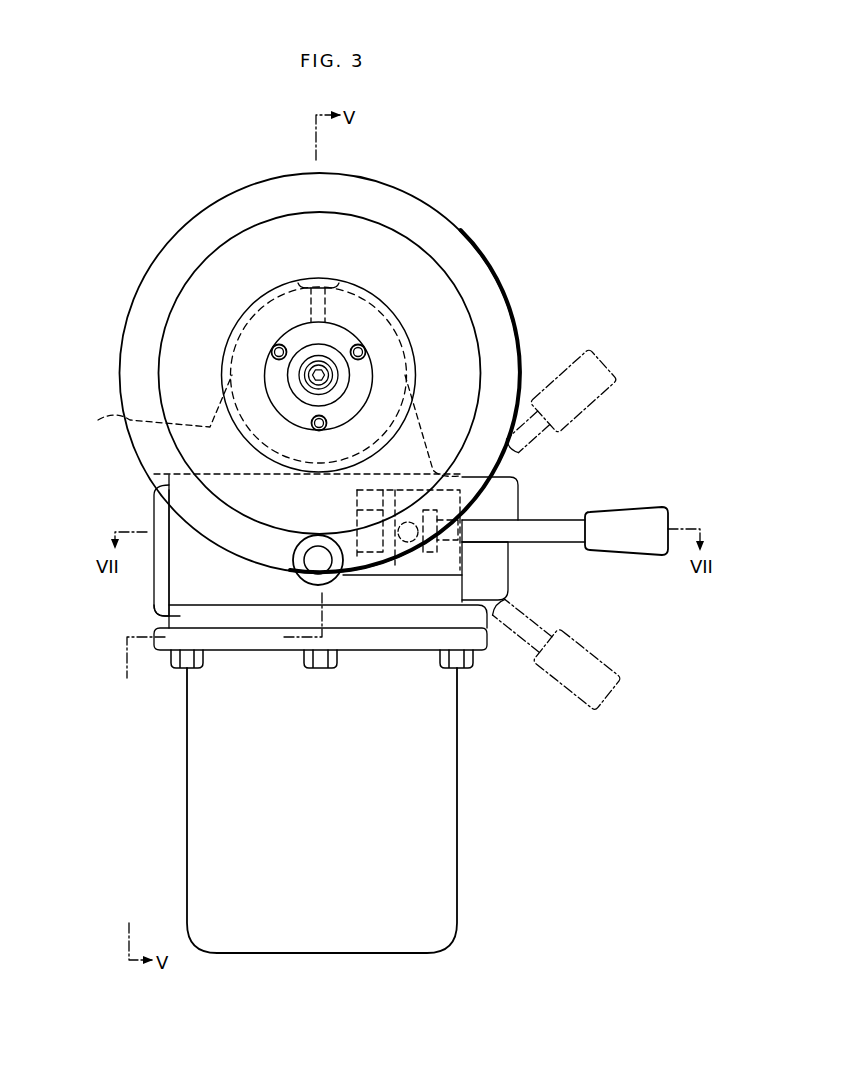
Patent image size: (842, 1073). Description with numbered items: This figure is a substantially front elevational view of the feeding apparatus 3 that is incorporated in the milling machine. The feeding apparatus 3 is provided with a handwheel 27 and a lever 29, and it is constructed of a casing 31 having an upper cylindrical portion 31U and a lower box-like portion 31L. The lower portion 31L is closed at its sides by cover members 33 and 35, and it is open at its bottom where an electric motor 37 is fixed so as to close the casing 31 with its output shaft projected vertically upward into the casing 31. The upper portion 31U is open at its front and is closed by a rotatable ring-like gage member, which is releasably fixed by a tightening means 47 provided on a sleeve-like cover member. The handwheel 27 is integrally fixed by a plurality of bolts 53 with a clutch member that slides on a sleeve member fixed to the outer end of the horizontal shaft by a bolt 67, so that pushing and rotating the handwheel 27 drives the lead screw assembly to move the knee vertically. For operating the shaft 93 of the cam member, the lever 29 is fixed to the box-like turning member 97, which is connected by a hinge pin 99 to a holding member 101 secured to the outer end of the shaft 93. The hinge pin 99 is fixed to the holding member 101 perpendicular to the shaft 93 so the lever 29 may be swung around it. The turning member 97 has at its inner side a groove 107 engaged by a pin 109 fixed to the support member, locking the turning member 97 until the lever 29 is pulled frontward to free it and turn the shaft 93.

The feeding apparatus 3 is at (97, 336).
The handwheel 27 is at (489, 267).
The lever 29 is at (565, 520).
The casing 31 is at (178, 545).
The upper cylindrical portion 31U is at (261, 425).
The lower box-like portion 31L is at (180, 588).
The cover member 33 is at (500, 578).
The cover member 35 is at (153, 498).
The electric motor 37 is at (447, 750).
The tightening means 47 is at (345, 286).
The bolts 53 is at (365, 350).
The bolt 67 is at (322, 376).
The shaft 93 is at (403, 573).
The turning member 97 is at (445, 567).
The hinge pin 99 is at (357, 493).
The holding member 101 is at (357, 520).
The groove 107 is at (423, 540).
The pin 109 is at (455, 500).